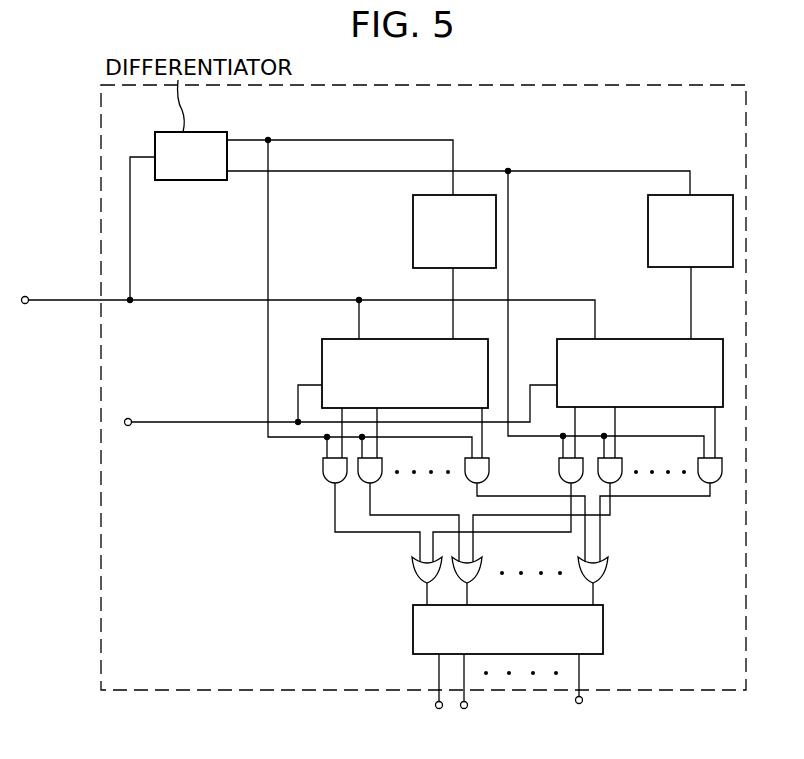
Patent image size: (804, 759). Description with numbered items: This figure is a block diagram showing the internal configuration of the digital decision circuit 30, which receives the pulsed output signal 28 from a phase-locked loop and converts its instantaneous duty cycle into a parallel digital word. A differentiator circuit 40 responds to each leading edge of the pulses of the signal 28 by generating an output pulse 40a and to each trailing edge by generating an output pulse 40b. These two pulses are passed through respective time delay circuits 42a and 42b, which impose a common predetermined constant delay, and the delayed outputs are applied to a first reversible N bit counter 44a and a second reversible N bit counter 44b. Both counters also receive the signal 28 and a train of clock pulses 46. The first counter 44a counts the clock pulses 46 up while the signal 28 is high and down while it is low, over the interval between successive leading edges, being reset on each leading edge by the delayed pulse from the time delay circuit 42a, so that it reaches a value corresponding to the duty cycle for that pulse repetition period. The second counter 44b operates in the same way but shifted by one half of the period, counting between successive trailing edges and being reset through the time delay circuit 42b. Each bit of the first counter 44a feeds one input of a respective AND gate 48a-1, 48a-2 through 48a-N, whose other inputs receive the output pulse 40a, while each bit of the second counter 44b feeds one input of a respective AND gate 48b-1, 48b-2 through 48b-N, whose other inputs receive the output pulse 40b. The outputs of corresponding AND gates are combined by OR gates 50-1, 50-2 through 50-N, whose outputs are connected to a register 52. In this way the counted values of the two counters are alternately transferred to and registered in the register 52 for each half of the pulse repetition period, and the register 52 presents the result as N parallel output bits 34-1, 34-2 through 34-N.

The digital decision circuit 30 is at (729, 69).
The output signal 28 is at (26, 304).
The differentiator circuit 40 is at (197, 132).
The output pulse 40a is at (266, 138).
The output pulse 40b is at (247, 172).
The time delay circuit 42a is at (413, 222).
The time delay circuit 42b is at (648, 222).
The first reversible N bit counter 44a is at (338, 339).
The second reversible N bit counter 44b is at (669, 339).
The clock pulses 46 is at (130, 426).
The AND gate 48a-1 is at (323, 478).
The AND gate 48a-2 is at (362, 486).
The AND gate 48a-N is at (466, 475).
The AND gate 48b-1 is at (559, 478).
The AND gate 48b-2 is at (612, 484).
The AND gate 48b-N is at (713, 482).
The OR gate 50-1 is at (413, 572).
The OR gate 50-2 is at (480, 576).
The OR gate 50-N is at (608, 572).
The register 52 is at (603, 636).
The parallel bit 34-1 is at (437, 710).
The parallel bit 34-2 is at (467, 708).
The parallel bit 34-N is at (582, 703).